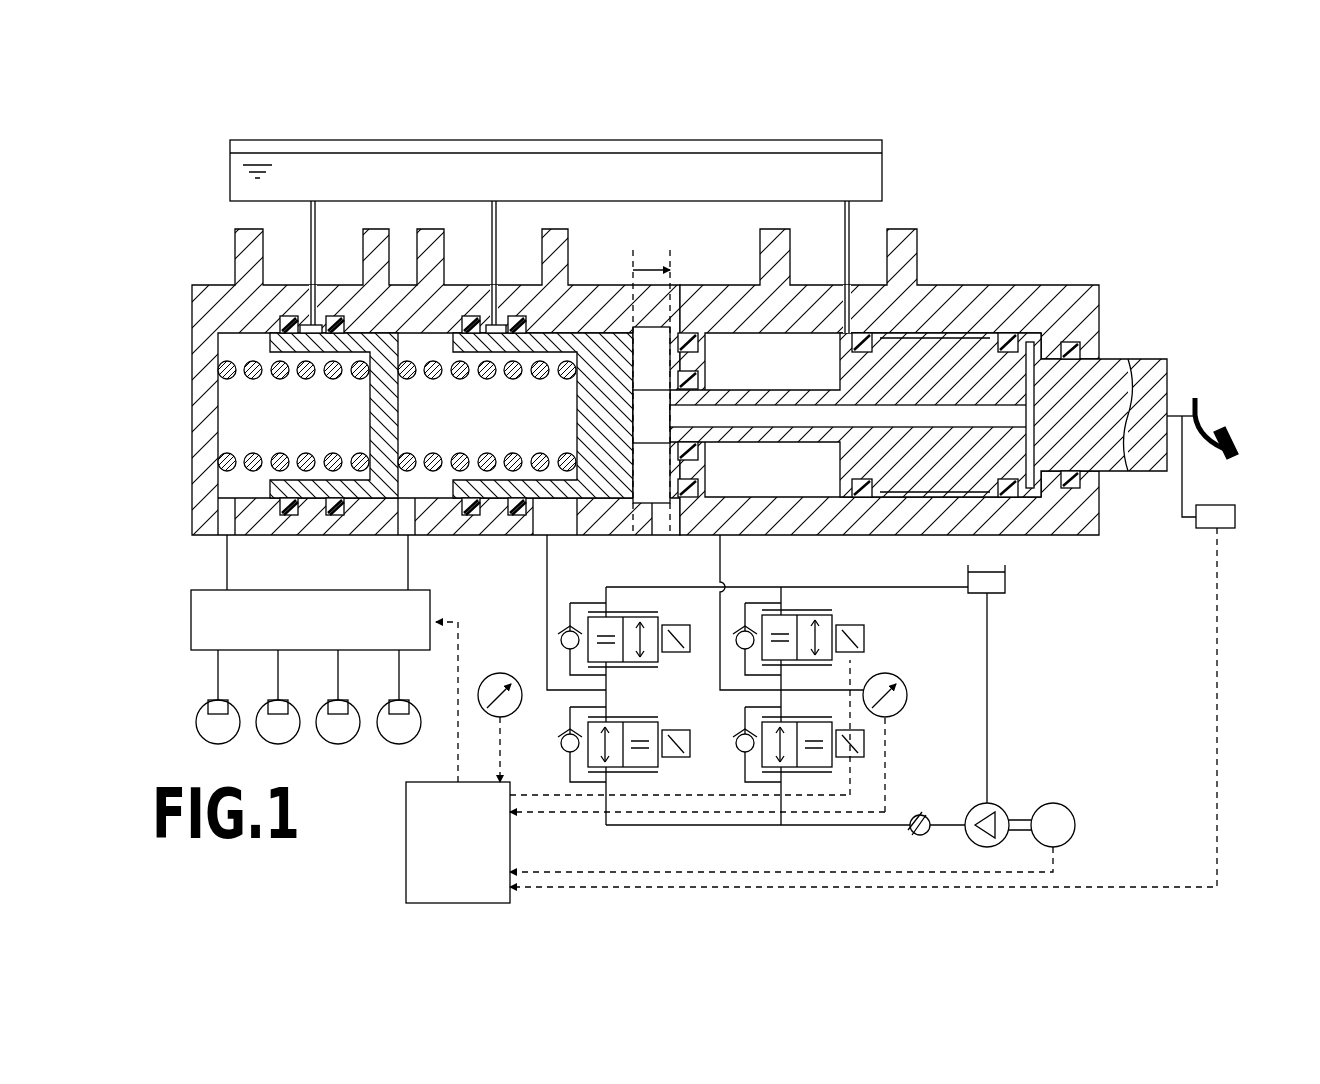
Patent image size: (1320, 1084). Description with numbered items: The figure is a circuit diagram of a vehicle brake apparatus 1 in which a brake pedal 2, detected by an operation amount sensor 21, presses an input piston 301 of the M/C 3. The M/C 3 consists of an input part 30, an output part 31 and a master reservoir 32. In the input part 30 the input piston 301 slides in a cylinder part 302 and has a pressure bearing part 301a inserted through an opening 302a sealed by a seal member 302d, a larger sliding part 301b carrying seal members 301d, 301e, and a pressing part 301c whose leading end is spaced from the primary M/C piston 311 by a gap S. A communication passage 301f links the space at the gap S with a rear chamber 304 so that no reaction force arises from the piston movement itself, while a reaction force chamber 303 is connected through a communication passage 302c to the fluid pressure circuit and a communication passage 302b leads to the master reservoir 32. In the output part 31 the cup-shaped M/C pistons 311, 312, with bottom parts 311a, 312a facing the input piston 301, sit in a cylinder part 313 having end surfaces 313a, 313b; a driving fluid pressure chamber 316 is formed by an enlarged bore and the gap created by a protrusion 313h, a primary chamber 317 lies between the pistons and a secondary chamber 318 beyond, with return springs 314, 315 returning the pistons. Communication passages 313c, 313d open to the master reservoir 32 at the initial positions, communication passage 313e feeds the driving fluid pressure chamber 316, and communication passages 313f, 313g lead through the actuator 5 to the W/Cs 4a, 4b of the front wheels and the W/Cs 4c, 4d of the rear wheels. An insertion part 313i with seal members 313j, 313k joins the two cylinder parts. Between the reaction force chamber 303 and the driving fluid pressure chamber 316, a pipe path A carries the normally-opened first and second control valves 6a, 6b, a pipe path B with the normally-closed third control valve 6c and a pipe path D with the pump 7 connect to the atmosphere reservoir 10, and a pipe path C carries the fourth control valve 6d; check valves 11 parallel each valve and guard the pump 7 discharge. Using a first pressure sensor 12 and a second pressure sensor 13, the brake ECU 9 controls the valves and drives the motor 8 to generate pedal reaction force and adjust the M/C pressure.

The brake apparatus 1 is at (1244, 214).
The brake pedal 2 is at (1240, 440).
The M/C 3 is at (933, 218).
The W/C 4a is at (234, 700).
The W/C 4b is at (294, 700).
The W/C 4c is at (354, 700).
The W/C 4d is at (415, 700).
The actuator for brake fluid pressure control 5 is at (191, 622).
The first control valve 6a is at (808, 722).
The second control valve 6b is at (635, 722).
The third control valve 6c is at (808, 615).
The fourth control valve 6d is at (635, 617).
The pump 7 is at (997, 804).
The motor 8 is at (1054, 803).
The brake ECU 9 is at (406, 810).
The atmosphere reservoir 10 is at (982, 594).
The check valve 11 is at (567, 650).
The first pressure sensor 12 is at (908, 692).
The second pressure sensor 13 is at (494, 673).
The operation amount sensor 21 is at (1235, 517).
The input part 30 is at (1049, 290).
The output part 31 is at (211, 279).
The master reservoir 32 is at (882, 157).
The input piston 301 is at (1097, 471).
The pressure bearing part 301a is at (1147, 472).
The sliding part 301b is at (910, 335).
The pressing part 301c is at (800, 392).
The seal member 301d is at (955, 362).
The seal member 301e is at (1008, 335).
The communication passage 301f is at (1048, 495).
The cylinder part 302 is at (1073, 299).
The opening 302a is at (1100, 360).
The communication passage 302b is at (850, 285).
The communication passage 302c is at (740, 520).
The seal member 302d is at (1090, 360).
The reaction force chamber 303 is at (772, 245).
The rear chamber 304 is at (1030, 500).
The M/C piston 311 is at (560, 500).
The bottom part 311a is at (555, 535).
The M/C piston 312 is at (385, 500).
The bottom part 312a is at (413, 308).
The cylinder part 313 is at (220, 310).
The one end surface 313a is at (723, 548).
The other end surface 313b is at (194, 478).
The communication passage 313c is at (497, 325).
The communication passage 313d is at (322, 325).
The communication passage 313e is at (547, 575).
The communication passage 313f is at (410, 535).
The communication passage 313g is at (232, 535).
The protrusion 313h is at (665, 535).
The insertion part 313i is at (690, 376).
The seal member 313j is at (688, 340).
The seal member 313k is at (704, 355).
The return spring 314 is at (500, 516).
The return spring 315 is at (322, 515).
The driving fluid pressure chamber 316 is at (648, 503).
The primary chamber 317 is at (560, 470).
The secondary chamber 318 is at (232, 413).
The pipe path A is at (548, 692).
The pipe path B is at (880, 586).
The pipe path C is at (604, 593).
The pipe path D is at (988, 690).
The gap S is at (651, 390).